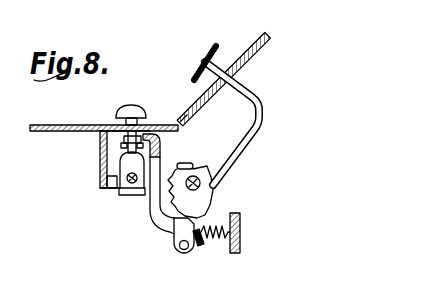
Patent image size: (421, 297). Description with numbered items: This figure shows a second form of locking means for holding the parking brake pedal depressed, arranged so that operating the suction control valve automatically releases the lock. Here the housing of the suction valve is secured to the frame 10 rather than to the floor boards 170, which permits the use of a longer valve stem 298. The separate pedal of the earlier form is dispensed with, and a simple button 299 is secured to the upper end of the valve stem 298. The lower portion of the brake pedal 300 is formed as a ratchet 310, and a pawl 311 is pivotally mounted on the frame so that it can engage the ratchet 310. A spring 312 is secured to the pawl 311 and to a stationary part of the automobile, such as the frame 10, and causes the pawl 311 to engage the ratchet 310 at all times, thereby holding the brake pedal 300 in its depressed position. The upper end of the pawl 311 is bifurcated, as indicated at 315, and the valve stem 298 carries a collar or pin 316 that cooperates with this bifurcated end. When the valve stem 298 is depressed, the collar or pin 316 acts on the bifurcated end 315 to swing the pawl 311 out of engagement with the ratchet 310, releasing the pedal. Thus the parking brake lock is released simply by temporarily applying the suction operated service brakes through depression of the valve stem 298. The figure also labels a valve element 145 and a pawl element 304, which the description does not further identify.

The frame 10 is at (100, 167).
The valve 145 is at (121, 200).
The floor boards 170 is at (258, 52).
The valve stem 298 is at (150, 117).
The button 299 is at (124, 107).
The brake pedal 300 is at (247, 91).
The pawl 304 is at (181, 163).
The ratchet 310 is at (222, 194).
The pawl 311 is at (170, 216).
The spring 312 is at (228, 216).
The bifurcated upper end of pawl 315 is at (100, 150).
The collar or pin 316 is at (190, 130).